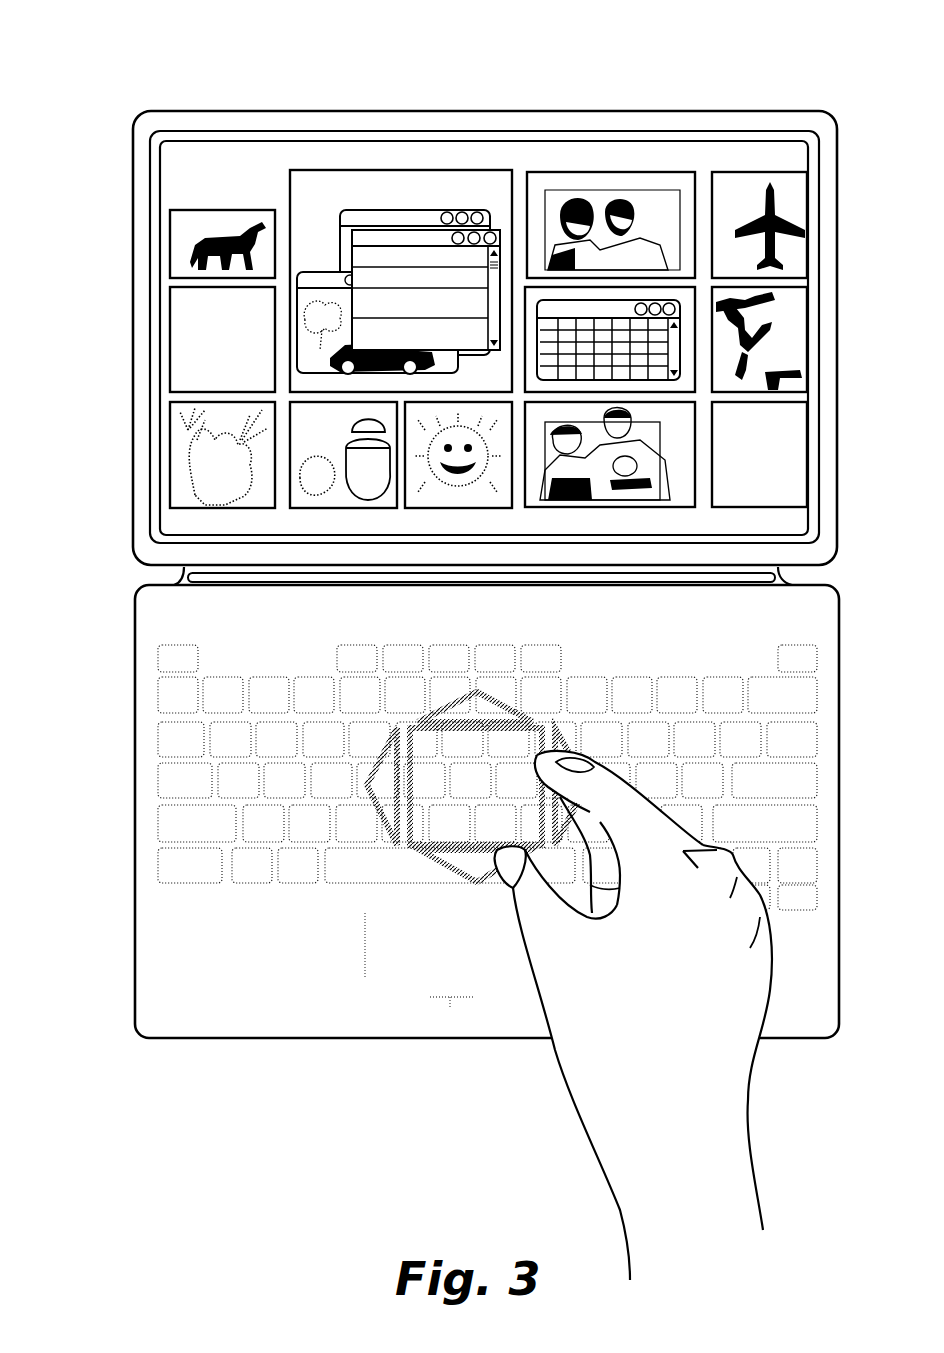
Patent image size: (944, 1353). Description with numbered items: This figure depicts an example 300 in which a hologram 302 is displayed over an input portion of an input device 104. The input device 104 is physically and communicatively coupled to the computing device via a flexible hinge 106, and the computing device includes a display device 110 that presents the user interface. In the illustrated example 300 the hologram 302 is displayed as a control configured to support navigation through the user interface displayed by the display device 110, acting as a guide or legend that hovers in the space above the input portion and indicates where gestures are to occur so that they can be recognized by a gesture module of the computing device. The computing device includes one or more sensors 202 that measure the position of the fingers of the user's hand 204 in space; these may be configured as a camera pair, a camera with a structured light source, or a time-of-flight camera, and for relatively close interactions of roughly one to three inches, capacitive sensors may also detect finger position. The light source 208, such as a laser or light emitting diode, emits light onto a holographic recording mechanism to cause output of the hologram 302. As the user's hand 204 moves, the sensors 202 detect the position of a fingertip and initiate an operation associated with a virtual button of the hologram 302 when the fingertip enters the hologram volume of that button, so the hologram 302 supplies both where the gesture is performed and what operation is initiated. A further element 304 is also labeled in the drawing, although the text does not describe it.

The example 300 is at (137, 76).
The display device 110 is at (156, 330).
The light source 208 is at (485, 118).
The flexible hinge 106 is at (128, 577).
The sensors 202 is at (487, 555).
The input device 104 is at (137, 806).
The hologram 302 is at (469, 896).
The track pad 304 is at (220, 1000).
The user's hand 204 is at (673, 1018).